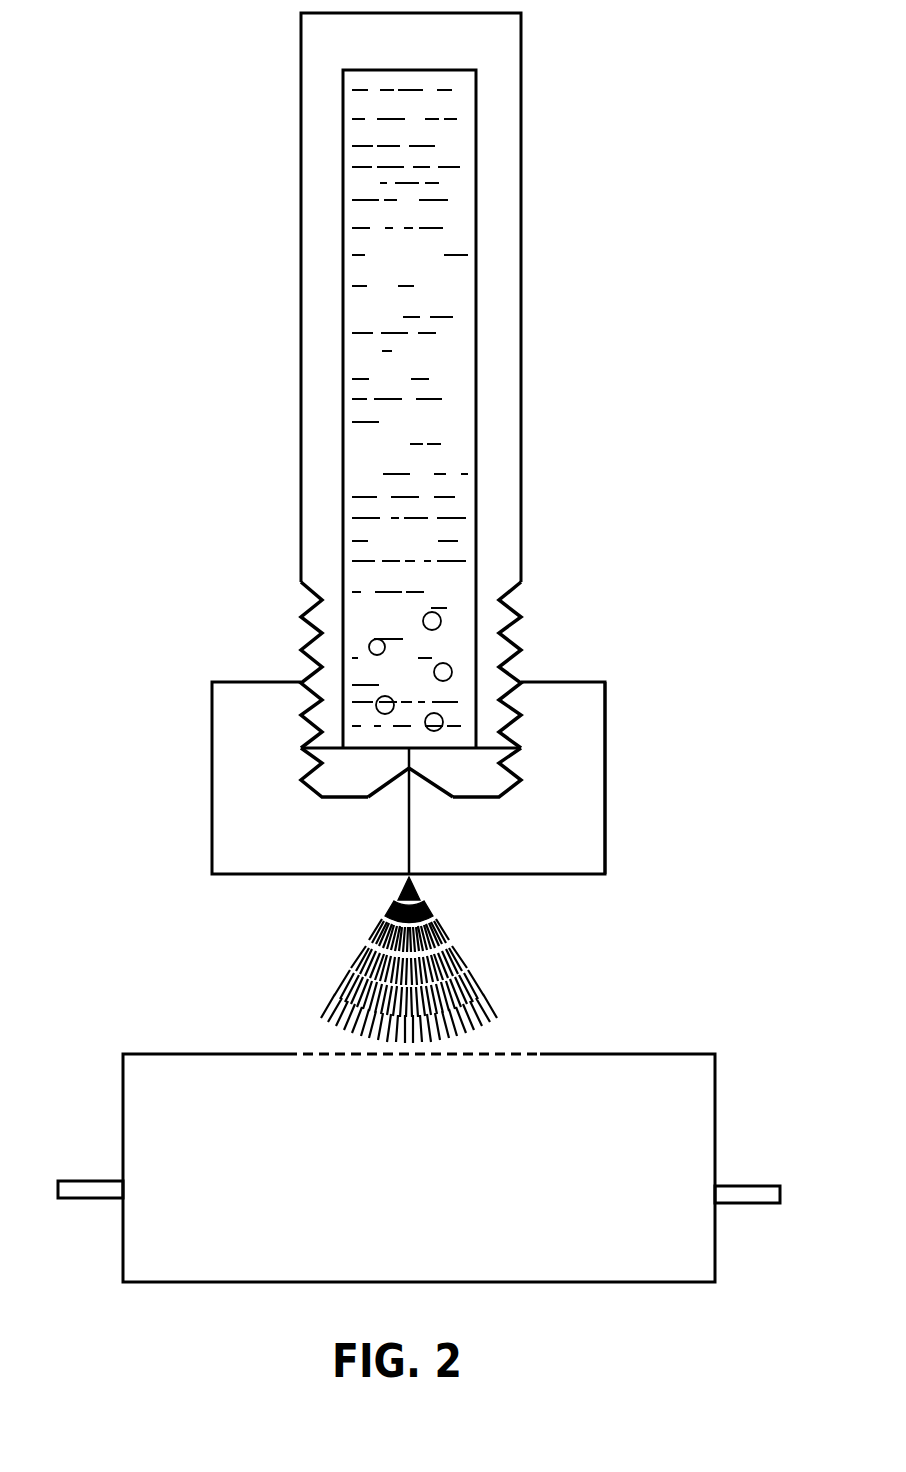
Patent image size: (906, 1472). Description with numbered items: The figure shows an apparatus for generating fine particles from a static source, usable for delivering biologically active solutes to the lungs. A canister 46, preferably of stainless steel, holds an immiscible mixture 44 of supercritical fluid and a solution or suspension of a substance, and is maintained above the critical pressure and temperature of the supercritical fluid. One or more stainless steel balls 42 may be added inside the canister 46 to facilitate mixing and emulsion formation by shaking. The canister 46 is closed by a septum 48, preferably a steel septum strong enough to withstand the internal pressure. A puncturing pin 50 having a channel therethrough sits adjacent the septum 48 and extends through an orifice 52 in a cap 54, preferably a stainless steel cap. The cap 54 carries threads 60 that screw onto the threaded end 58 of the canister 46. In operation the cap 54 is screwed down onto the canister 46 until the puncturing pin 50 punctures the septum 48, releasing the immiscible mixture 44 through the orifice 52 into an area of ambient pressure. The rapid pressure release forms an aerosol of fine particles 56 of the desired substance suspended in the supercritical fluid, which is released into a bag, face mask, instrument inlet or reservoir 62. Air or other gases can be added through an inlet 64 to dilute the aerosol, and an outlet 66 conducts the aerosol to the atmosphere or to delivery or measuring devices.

The stainless steel balls 42 is at (368, 648).
The immiscible mixture 44 is at (477, 256).
The canister 46 is at (522, 388).
The septum 48 is at (518, 749).
The puncturing pin 50 is at (408, 763).
The orifice 52 is at (280, 838).
The cap 54 is at (605, 843).
The fine particles 56 is at (440, 938).
The threaded end 58 is at (508, 628).
The threads 60 is at (302, 715).
The reservoir 62 is at (718, 1108).
The inlet 64 is at (755, 1187).
The outlet 66 is at (70, 1180).